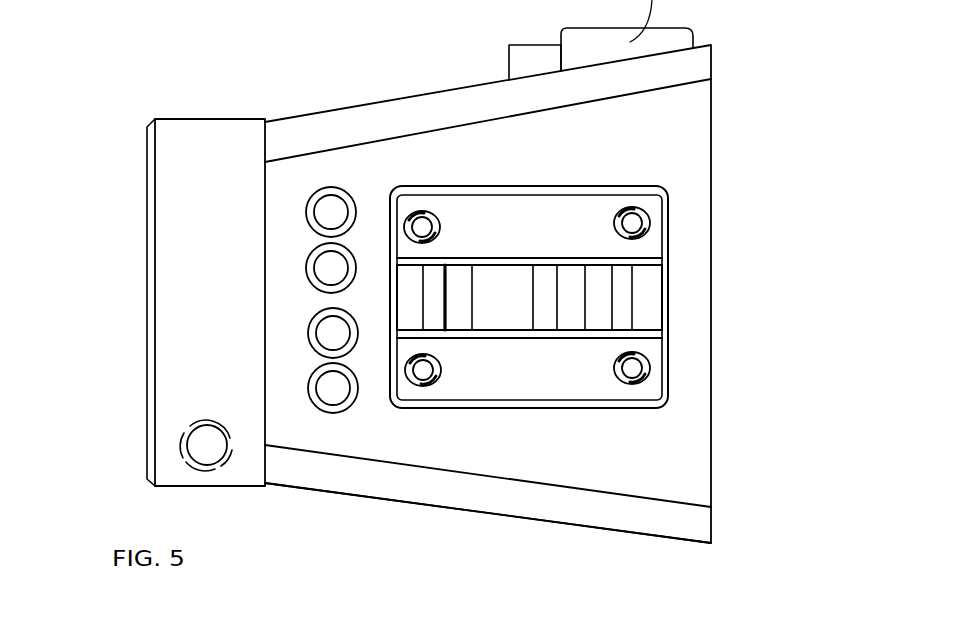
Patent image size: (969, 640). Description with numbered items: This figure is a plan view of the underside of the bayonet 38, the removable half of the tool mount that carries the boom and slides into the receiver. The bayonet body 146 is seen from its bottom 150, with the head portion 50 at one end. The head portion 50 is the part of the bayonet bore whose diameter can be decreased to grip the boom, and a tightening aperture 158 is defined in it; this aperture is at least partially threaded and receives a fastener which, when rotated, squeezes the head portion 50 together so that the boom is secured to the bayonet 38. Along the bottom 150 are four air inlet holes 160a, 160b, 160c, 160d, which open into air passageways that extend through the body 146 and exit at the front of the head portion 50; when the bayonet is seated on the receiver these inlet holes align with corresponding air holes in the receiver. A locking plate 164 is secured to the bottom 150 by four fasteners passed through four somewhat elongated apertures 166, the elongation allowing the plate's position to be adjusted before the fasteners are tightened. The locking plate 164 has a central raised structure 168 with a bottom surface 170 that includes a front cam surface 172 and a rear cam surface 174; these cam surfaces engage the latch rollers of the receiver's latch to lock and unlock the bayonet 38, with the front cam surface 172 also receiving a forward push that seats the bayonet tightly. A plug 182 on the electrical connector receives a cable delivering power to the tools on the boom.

The bayonet 38 is at (137, 70).
The head portion 50 is at (213, 153).
The body 146 is at (585, 445).
The bottom 150 is at (485, 284).
The tightening aperture 158 is at (205, 446).
The air inlet hole 160a is at (333, 390).
The air inlet hole 160b is at (327, 337).
The air inlet hole 160c is at (329, 270).
The air inlet hole 160d is at (340, 209).
The locking plate 164 is at (511, 370).
The apertures 166 is at (432, 226).
The raised structure 168 is at (518, 277).
The bottom surface 170 is at (502, 289).
The front cam surface 172 is at (457, 291).
The rear cam surface 174 is at (607, 287).
The plug 182 is at (514, 55).